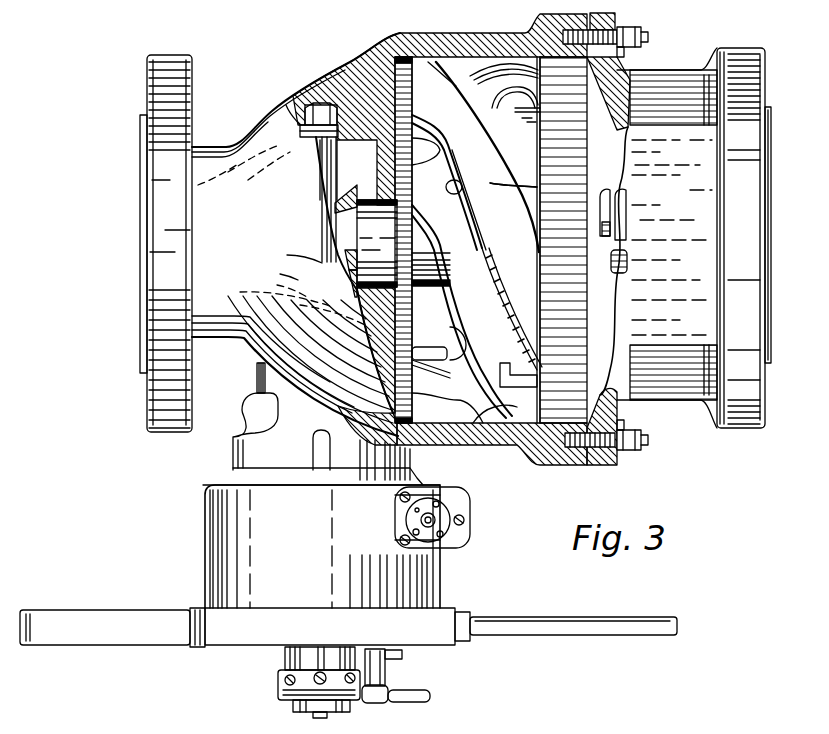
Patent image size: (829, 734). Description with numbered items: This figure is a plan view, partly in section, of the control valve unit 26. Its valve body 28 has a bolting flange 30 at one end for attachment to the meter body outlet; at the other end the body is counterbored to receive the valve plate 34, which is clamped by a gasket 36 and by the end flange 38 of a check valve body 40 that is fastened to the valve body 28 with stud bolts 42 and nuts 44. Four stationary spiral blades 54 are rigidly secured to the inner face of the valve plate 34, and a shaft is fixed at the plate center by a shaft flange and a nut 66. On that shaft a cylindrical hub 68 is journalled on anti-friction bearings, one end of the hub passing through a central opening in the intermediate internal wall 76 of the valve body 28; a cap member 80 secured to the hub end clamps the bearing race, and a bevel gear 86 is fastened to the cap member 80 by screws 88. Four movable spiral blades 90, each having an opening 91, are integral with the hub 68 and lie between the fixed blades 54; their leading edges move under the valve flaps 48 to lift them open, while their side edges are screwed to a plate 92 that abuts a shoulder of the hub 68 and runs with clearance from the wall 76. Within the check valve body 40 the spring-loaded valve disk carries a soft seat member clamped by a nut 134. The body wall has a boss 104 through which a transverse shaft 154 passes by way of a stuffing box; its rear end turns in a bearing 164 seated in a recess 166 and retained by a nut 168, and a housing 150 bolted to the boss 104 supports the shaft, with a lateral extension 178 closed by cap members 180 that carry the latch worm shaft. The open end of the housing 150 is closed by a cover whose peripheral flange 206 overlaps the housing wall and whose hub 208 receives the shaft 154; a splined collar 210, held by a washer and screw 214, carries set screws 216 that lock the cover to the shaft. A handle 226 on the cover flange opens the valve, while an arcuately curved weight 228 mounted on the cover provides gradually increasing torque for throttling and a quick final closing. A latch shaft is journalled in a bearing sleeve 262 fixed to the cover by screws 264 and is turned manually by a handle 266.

The control valve unit 26 is at (428, 34).
The valve body 28 is at (497, 434).
The bolting flange 30 is at (192, 62).
The valve plate 34 is at (563, 240).
The gasket 36 is at (594, 92).
The end flange 38 is at (616, 15).
The check valve body 40 is at (685, 238).
The stud bolts 42 is at (645, 38).
The nuts 44 is at (624, 55).
The valve flaps 48 is at (505, 283).
The stationary spiral blades 54 is at (452, 62).
The nut 66 is at (620, 192).
The cylindrical hub 68 is at (438, 278).
The intermediate internal wall 76 is at (374, 358).
The cap member 80 is at (340, 275).
The bevel gear 86 is at (345, 188).
The screws 88 is at (330, 217).
The movable spiral blades 90 is at (486, 184).
The opening 91 is at (447, 187).
The plate 92 is at (411, 99).
The boss 104 is at (257, 382).
The nut 134 is at (624, 260).
The housing 150 is at (206, 550).
The shaft 154 is at (320, 158).
The bearing 164 is at (302, 122).
The recess 166 is at (297, 100).
The nut 168 is at (298, 92).
The lateral extension 178 is at (465, 535).
The cap members 180 is at (448, 510).
The peripheral flange 206 is at (196, 646).
The hub 208 is at (285, 652).
The collar 210 is at (278, 686).
The screw 214 is at (325, 718).
The set screws 216 is at (321, 662).
The handle 226 is at (566, 617).
The weight 228 is at (124, 645).
The bearing sleeve 262 is at (390, 670).
The screws 264 is at (404, 658).
The handle 266 is at (428, 702).